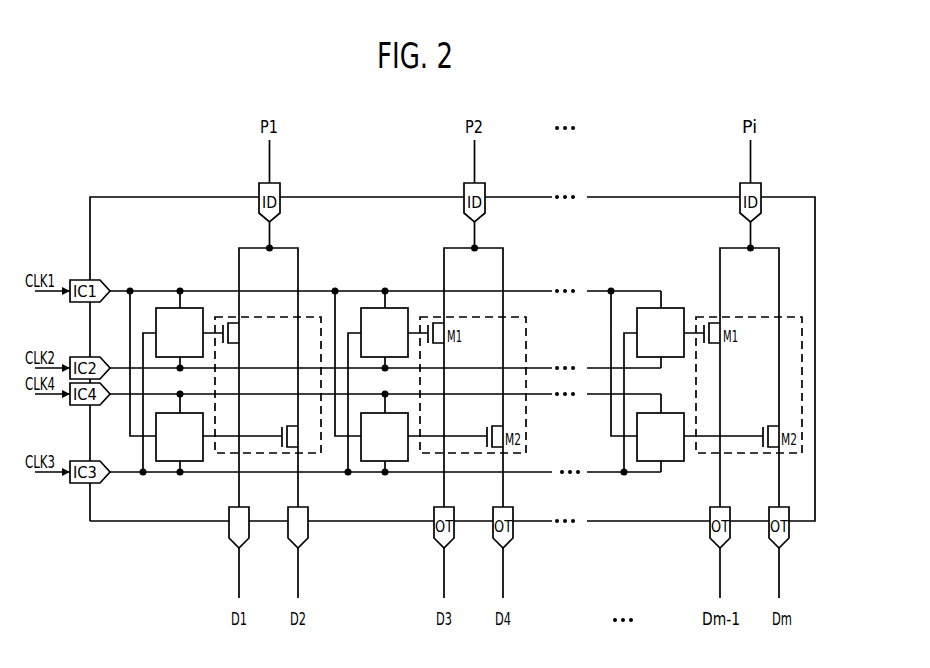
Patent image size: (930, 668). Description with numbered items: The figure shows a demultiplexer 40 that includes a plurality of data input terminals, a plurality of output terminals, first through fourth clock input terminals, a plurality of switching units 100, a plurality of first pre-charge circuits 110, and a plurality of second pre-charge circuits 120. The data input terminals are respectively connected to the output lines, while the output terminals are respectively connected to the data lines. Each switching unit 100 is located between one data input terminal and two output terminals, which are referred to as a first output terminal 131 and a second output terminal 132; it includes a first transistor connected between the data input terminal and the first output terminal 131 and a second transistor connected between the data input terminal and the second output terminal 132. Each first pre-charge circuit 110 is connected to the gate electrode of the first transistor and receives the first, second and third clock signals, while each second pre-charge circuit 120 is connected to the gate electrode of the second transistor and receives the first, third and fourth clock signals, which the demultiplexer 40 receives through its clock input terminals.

The demultiplexer 40 is at (157, 196).
The switching unit 100 is at (260, 317).
The first pre-charge circuit 110 is at (169, 308).
The second pre-charge circuit 120 is at (168, 462).
The first output terminal 131 is at (232, 546).
The second output terminal 132 is at (304, 546).